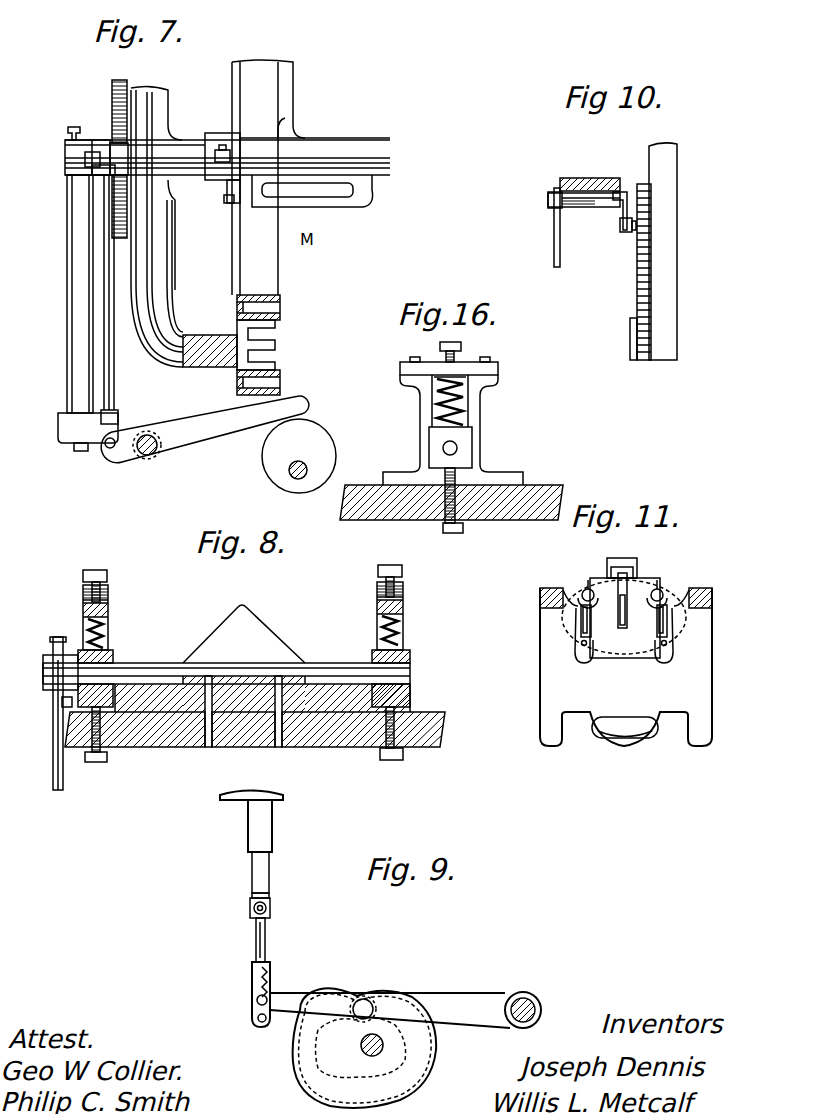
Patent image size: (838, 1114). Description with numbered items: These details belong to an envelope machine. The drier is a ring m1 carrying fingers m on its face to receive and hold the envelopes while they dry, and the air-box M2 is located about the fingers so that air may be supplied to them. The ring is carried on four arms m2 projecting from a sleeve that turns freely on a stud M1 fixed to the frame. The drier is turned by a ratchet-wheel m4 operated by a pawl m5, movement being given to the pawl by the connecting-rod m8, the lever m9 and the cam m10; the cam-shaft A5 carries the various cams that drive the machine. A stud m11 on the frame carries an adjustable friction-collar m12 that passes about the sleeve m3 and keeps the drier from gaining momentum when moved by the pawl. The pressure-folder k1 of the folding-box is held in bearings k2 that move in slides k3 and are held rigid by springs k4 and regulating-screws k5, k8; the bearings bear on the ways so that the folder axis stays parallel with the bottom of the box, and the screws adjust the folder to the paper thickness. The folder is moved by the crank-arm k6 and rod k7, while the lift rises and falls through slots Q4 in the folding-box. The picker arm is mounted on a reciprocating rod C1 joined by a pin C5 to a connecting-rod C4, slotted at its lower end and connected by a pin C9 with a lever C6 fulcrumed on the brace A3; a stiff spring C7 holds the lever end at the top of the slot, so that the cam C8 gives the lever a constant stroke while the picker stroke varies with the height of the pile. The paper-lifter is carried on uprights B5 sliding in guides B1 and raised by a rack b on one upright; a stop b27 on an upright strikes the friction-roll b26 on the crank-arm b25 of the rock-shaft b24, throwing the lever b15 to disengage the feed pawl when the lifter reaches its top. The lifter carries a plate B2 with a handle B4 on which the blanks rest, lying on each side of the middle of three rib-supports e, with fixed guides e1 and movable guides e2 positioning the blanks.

In FIG. 7, the ratchet-wheel m4 is at (112, 105).
In FIG. 7, the pawl m5 is at (108, 170).
In FIG. 7, the sleeve m3 is at (197, 138).
In FIG. 7, the adjustable friction-collar m12 is at (230, 181).
In FIG. 7, the stud m11 is at (228, 204).
In FIG. 7, the arms m2 is at (163, 273).
In FIG. 7, the stud M1 is at (390, 148).
In FIG. 7, the air-box M2 is at (282, 305).
In FIG. 7, the fingers m is at (276, 326).
In FIG. 7, the ring m1 is at (237, 327).
In FIG. 7, the connecting-rod m8 is at (110, 390).
In FIG. 7, the lever m9 is at (205, 429).
In FIG. 7, the cam m10 is at (299, 456).
In FIG. 7, the cam-shaft A5 is at (289, 473).
In FIG. 10, the uprights B5 is at (678, 276).
In FIG. 10, the rack b is at (643, 283).
In FIG. 10, the stop b27 is at (631, 341).
In FIG. 10, the rock-shaft b24 is at (608, 204).
In FIG. 10, the lever b15 is at (554, 241).
In FIG. 10, the crank-arm b25 is at (621, 214).
In FIG. 10, the friction-roll b26 is at (626, 238).
In FIG. 16, the regulating-screw k5 is at (462, 345).
In FIG. 8, the regulating-screw k5 is at (106, 580).
In FIG. 16, the slides k3 is at (420, 409).
In FIG. 8, the slides k3 is at (110, 616).
In FIG. 16, the springs k4 is at (462, 399).
In FIG. 8, the springs k4 is at (90, 632).
In FIG. 16, the bearings k2 is at (431, 448).
In FIG. 8, the bearings k2 is at (114, 657).
In FIG. 16, the pressure-folder k1 is at (458, 448).
In FIG. 8, the pressure-folder k1 is at (244, 634).
In FIG. 16, the regulating-screw k8 is at (463, 529).
In FIG. 8, the regulating-screw k8 is at (100, 764).
In FIG. 8, the slots Q4 is at (243, 724).
In FIG. 8, the crank-arm k6 is at (53, 660).
In FIG. 8, the rod k7 is at (62, 745).
In FIG. 11, the plate B2 is at (626, 663).
In FIG. 11, the guides B1 is at (553, 593).
In FIG. 11, the fixed guides e1 is at (588, 581).
In FIG. 11, the rib-supports e is at (585, 610).
In FIG. 11, the movable guides e2 is at (587, 650).
In FIG. 11, the handle B4 is at (625, 740).
In FIG. 9, the reciprocating rod C1 is at (264, 877).
In FIG. 9, the pin C5 is at (272, 906).
In FIG. 9, the connecting-rod C4 is at (266, 937).
In FIG. 9, the stiff spring C7 is at (272, 975).
In FIG. 9, the pin C9 is at (256, 1005).
In FIG. 9, the lever C6 is at (465, 1003).
In FIG. 9, the brace A3 is at (527, 997).
In FIG. 9, the cam C8 is at (365, 1048).